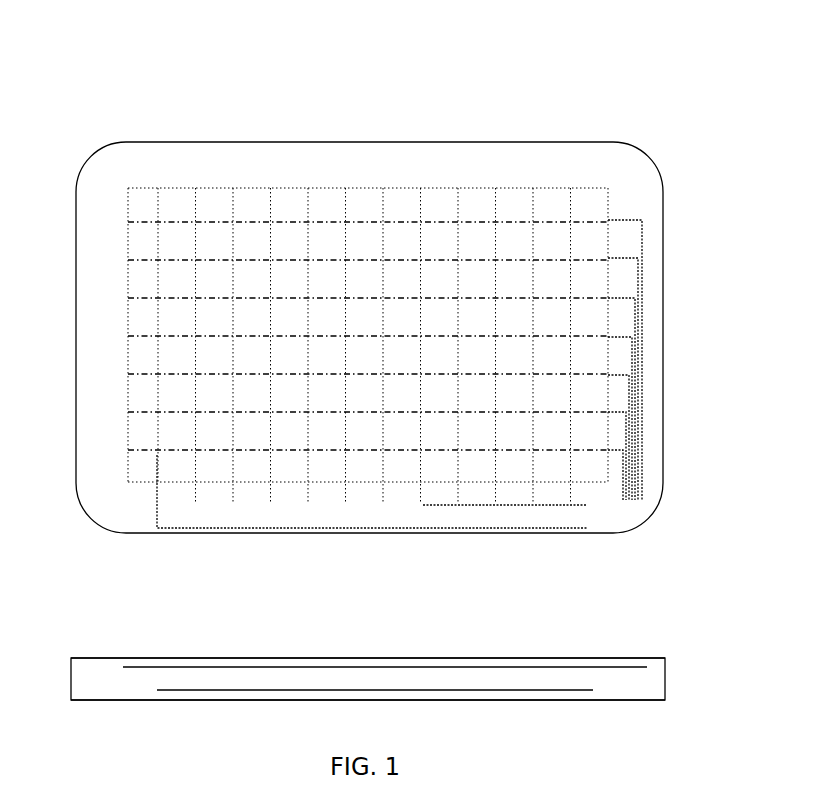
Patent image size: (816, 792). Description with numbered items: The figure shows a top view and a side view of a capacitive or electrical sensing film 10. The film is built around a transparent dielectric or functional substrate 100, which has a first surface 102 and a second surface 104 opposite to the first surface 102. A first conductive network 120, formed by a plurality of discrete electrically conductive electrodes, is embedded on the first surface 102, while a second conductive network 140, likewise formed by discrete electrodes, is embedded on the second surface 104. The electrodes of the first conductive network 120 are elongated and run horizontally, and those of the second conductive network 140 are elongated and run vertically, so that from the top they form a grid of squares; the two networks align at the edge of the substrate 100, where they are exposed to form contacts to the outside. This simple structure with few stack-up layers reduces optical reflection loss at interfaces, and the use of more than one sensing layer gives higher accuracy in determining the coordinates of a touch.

The capacitive or electrical sensing film 10 is at (355, 398).
The transparent dielectric or functional substrate 100 is at (463, 164).
The first surface 102 is at (88, 656).
The second surface 104 is at (88, 702).
The first conductive network 120 is at (185, 453).
The second conductive network 140 is at (461, 470).